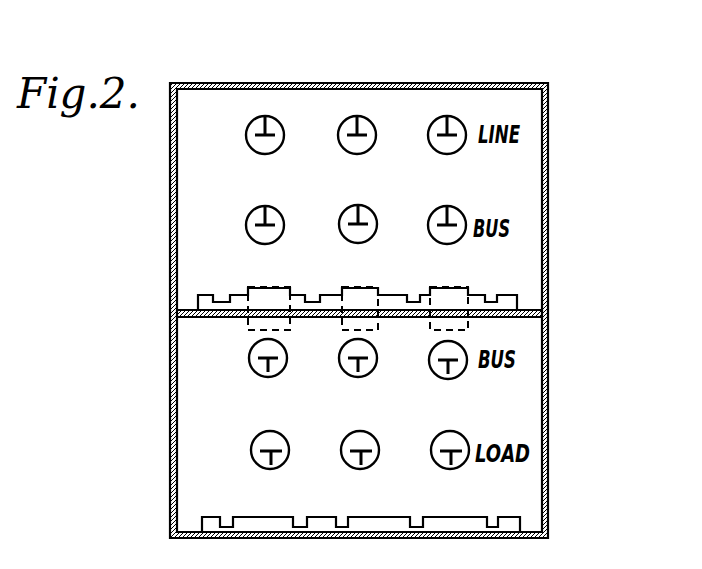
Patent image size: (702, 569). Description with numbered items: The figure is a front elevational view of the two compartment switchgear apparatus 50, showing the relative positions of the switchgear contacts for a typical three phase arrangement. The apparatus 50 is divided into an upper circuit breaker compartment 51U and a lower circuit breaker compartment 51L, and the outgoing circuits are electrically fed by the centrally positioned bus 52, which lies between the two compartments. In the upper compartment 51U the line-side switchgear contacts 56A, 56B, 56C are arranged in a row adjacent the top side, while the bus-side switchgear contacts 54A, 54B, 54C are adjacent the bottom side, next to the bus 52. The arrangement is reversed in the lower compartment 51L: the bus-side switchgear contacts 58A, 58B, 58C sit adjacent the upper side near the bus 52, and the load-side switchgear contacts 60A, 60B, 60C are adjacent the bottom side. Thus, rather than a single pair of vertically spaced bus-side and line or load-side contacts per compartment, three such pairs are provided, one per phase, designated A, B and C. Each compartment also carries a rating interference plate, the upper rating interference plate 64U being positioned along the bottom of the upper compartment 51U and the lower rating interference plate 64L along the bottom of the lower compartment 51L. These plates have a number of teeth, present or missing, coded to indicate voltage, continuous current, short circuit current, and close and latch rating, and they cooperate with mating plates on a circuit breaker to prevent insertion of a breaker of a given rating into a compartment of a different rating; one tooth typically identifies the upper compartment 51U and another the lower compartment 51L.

The two compartment switchgear apparatus 50 is at (549, 113).
The upper circuit breaker compartment 51U is at (190, 242).
The lower circuit breaker compartment 51L is at (192, 444).
The bus 52 is at (357, 288).
The bus-side switchgear contact 54A is at (272, 193).
The bus-side switchgear contact 54B is at (358, 205).
The bus-side switchgear contact 54C is at (447, 206).
The line-side switchgear contact 56A is at (263, 116).
The line-side switchgear contact 56B is at (356, 116).
The line-side switchgear contact 56C is at (448, 116).
The bus-side switchgear contact 58A is at (264, 371).
The bus-side switchgear contact 58B is at (354, 371).
The bus-side switchgear contact 58C is at (444, 373).
The load-side switchgear contact 60A is at (272, 463).
The load-side switchgear contact 60B is at (362, 463).
The load-side switchgear contact 60C is at (452, 463).
The rating interference plate 64U is at (210, 295).
The rating interference plate 64L is at (210, 518).